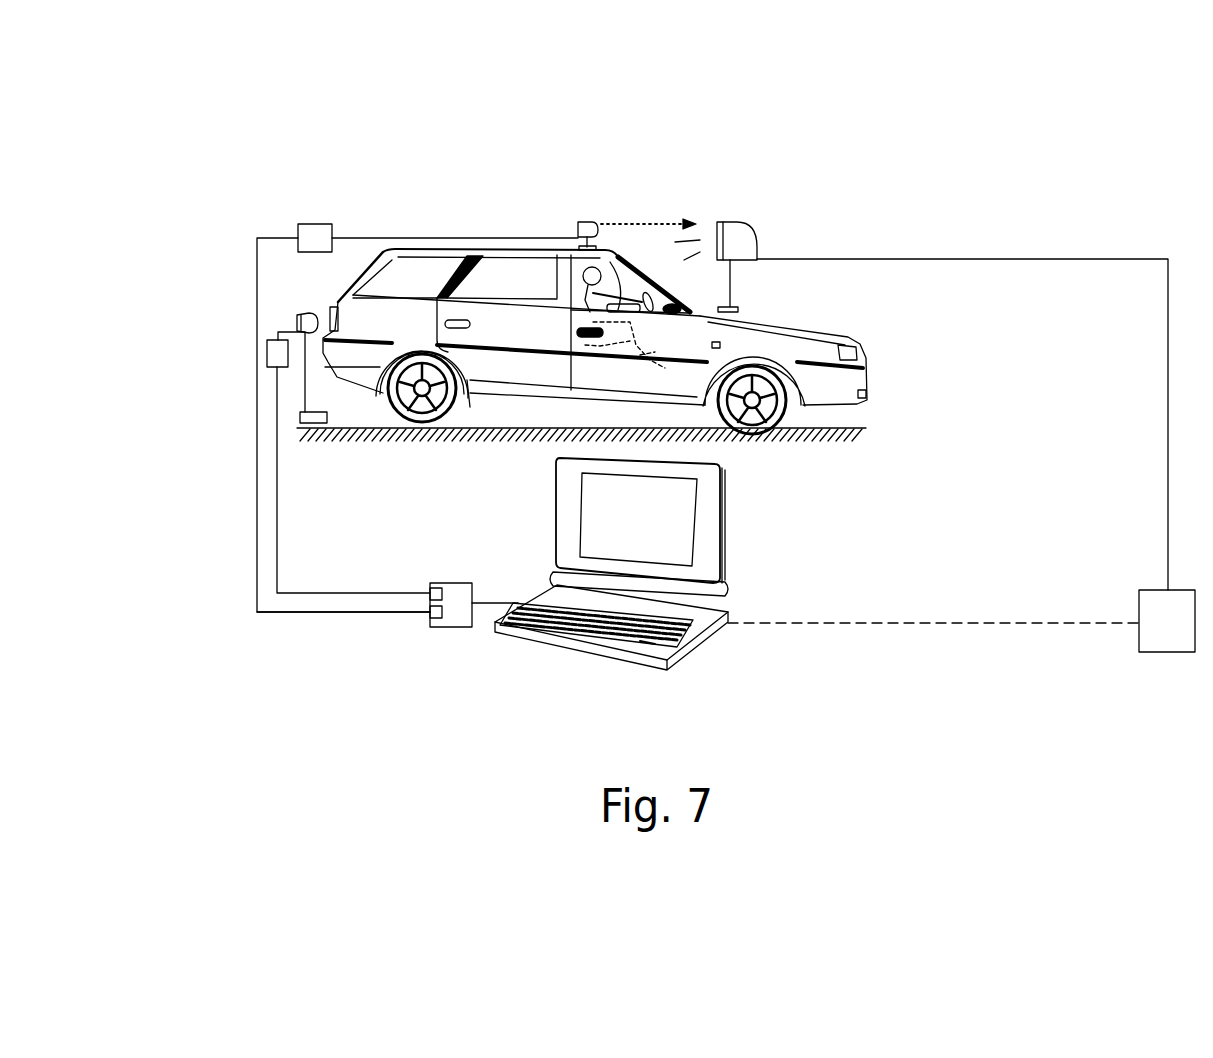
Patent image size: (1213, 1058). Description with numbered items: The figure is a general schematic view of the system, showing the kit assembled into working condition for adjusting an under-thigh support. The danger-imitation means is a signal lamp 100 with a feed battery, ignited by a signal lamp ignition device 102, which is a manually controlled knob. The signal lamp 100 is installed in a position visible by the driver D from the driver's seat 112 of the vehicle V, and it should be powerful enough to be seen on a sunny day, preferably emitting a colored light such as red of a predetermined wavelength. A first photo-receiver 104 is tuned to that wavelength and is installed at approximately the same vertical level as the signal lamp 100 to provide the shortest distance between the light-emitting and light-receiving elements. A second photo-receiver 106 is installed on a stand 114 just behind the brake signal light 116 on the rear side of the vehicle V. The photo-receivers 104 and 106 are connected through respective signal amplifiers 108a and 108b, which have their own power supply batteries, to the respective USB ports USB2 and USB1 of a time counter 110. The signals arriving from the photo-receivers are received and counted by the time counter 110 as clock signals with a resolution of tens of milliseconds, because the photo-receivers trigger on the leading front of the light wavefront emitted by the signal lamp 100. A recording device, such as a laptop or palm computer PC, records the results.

The signal lamp 100 is at (740, 233).
The signal lamp ignition device 102 is at (1176, 635).
The first photo-receiver 104 is at (583, 222).
The second photo-receiver 106 is at (297, 318).
The signal amplifier 108a is at (320, 237).
The signal amplifier 108b is at (267, 362).
The time counter 110 is at (460, 627).
The driver's seat 112 is at (560, 306).
The stand 114 is at (303, 388).
The brake signal light 116 is at (332, 307).
The vehicle V is at (466, 240).
The driver D is at (615, 272).
The USB port USB1 is at (310, 612).
The USB port USB2 is at (428, 615).
The computer PC is at (710, 620).